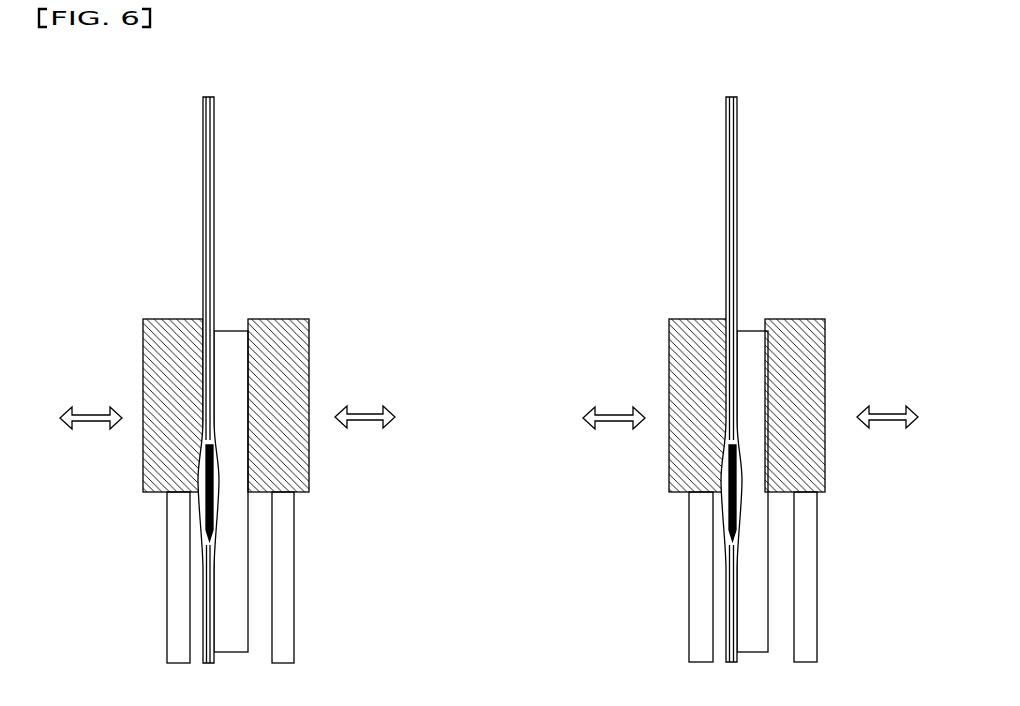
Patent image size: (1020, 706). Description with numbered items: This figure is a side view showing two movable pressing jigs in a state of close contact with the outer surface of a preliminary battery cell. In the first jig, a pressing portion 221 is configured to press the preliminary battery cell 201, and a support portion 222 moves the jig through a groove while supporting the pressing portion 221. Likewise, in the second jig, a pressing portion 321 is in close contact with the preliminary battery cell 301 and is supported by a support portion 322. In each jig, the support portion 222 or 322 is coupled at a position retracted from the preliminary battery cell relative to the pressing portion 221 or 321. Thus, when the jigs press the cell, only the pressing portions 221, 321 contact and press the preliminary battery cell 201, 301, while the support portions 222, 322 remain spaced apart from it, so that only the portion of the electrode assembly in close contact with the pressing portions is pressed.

The preliminary battery cell 201 is at (227, 333).
The pressing portion 221 is at (144, 365).
The support portion 222 is at (167, 583).
The preliminary battery cell 301 is at (747, 333).
The pressing portion 321 is at (669, 355).
The support portion 322 is at (690, 570).